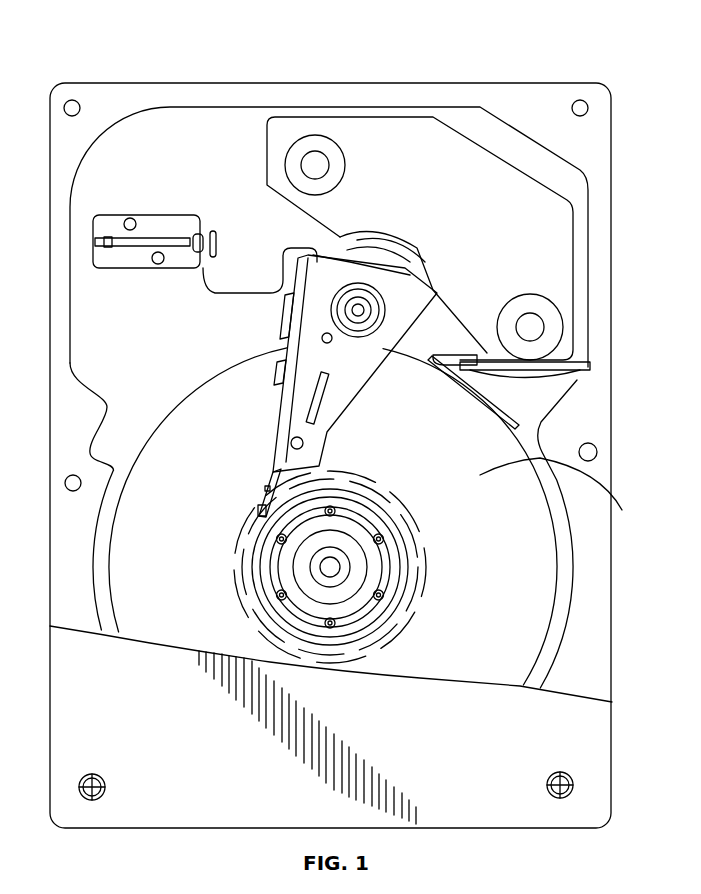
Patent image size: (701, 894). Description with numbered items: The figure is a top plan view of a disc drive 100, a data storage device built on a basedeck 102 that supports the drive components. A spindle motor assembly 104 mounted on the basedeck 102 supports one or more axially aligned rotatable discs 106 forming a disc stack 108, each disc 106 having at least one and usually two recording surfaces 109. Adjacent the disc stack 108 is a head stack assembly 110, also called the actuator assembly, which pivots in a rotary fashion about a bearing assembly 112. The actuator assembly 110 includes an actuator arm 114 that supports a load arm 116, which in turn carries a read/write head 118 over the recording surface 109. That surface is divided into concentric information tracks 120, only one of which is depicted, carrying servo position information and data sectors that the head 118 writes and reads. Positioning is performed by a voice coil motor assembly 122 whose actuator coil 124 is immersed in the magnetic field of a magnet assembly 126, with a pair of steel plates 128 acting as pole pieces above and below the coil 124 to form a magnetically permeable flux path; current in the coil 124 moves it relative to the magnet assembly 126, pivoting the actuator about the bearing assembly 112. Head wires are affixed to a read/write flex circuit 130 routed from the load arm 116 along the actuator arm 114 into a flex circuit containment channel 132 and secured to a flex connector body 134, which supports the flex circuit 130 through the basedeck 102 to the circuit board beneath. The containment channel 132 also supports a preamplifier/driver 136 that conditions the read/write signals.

The disc drive 100 is at (256, 66).
The basedeck 102 is at (205, 143).
The spindle motor assembly 104 is at (366, 529).
The rotatable disc 106 is at (560, 560).
The disc stack 108 is at (563, 578).
The recording surface 109 is at (565, 496).
The head stack assembly 110 is at (351, 396).
The bearing assembly 112 is at (394, 304).
The actuator arm 114 is at (317, 440).
The load arm 116 is at (268, 482).
The read/write head 118 is at (253, 508).
The information track 120 is at (400, 620).
The voice coil motor assembly 122 is at (561, 204).
The actuator coil 124 is at (340, 237).
The magnet assembly 126 is at (378, 135).
The steel plate 128 is at (553, 268).
The read/write flex circuit 130 is at (213, 291).
The flex circuit containment channel 132 is at (290, 383).
The flex connector body 134 is at (103, 262).
The preamplifier/driver 136 is at (293, 310).